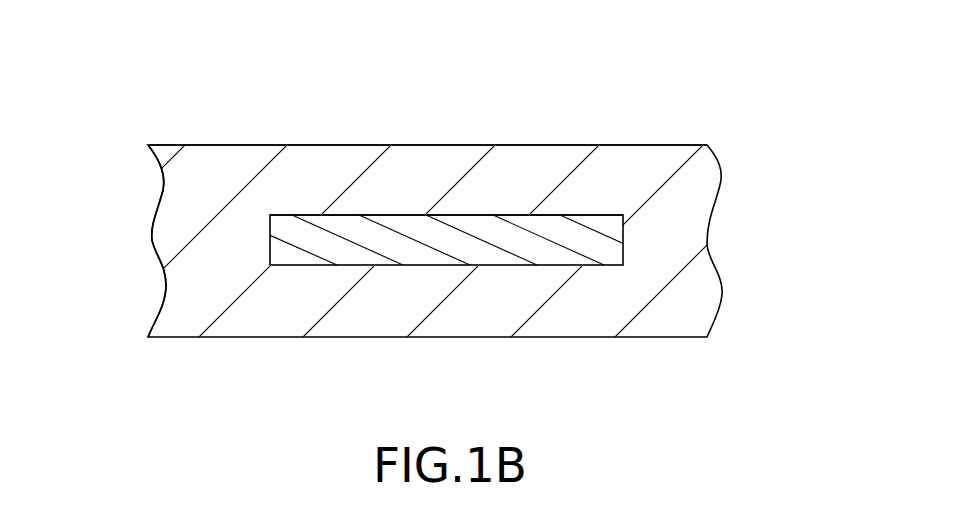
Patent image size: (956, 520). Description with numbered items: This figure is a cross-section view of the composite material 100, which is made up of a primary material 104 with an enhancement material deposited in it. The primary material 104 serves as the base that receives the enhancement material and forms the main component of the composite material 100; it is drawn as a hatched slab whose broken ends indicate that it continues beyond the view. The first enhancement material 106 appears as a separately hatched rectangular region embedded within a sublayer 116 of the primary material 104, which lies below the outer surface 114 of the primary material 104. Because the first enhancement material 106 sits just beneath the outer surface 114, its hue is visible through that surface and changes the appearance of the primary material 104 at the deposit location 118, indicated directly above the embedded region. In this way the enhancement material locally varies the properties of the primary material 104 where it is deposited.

The composite material 100 is at (404, 217).
The primary material 104 is at (692, 163).
The first enhancement material 106 is at (427, 253).
The outer surface 114 is at (480, 145).
The sublayer 116 is at (188, 180).
The deposit location 118 is at (411, 196).